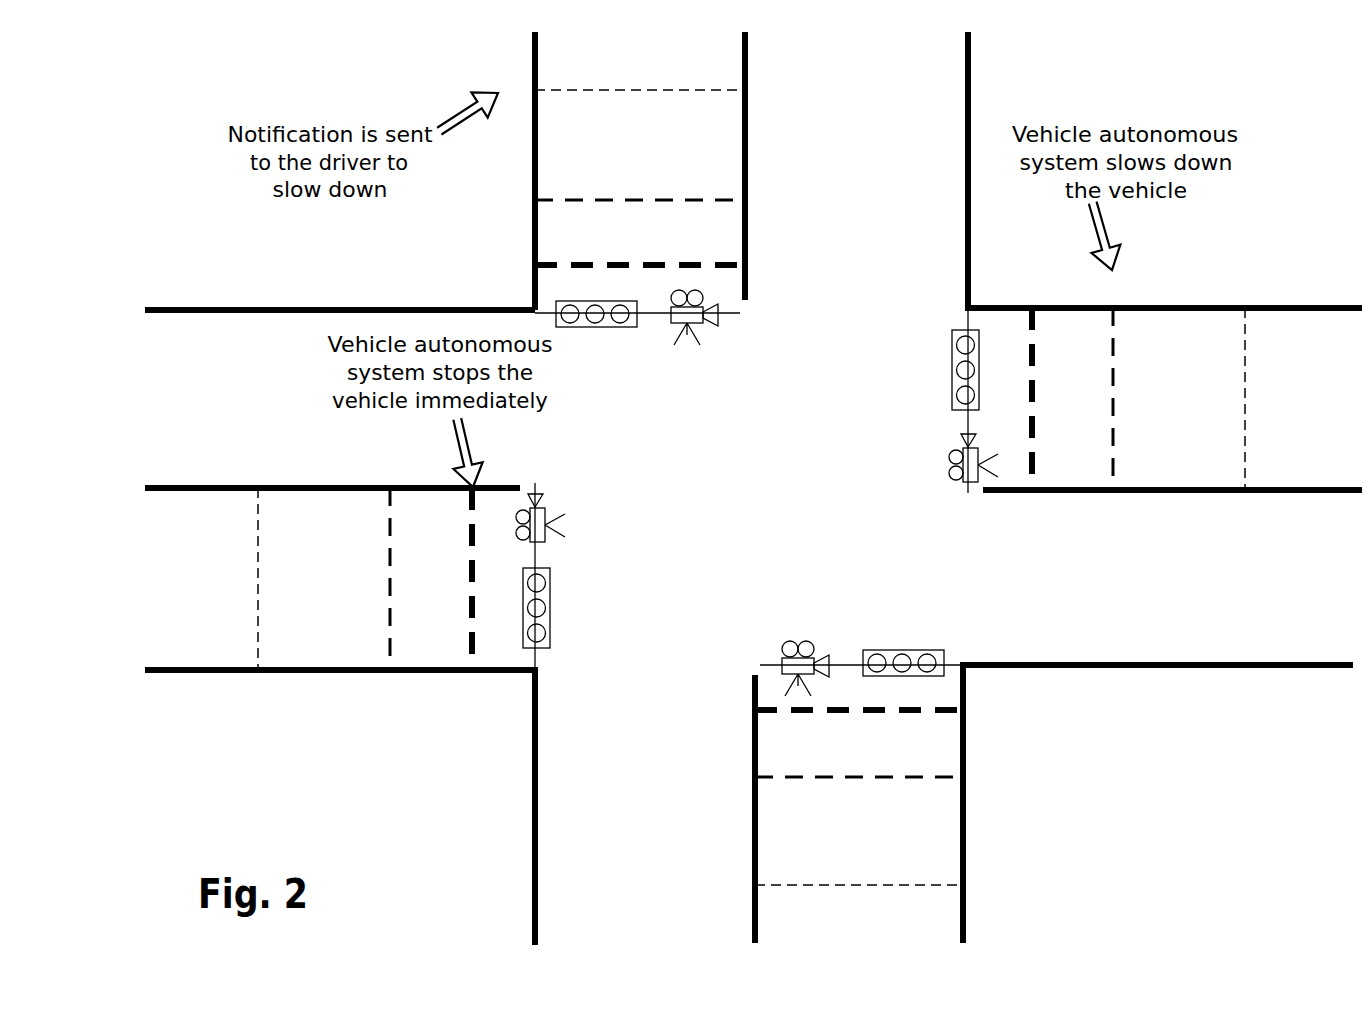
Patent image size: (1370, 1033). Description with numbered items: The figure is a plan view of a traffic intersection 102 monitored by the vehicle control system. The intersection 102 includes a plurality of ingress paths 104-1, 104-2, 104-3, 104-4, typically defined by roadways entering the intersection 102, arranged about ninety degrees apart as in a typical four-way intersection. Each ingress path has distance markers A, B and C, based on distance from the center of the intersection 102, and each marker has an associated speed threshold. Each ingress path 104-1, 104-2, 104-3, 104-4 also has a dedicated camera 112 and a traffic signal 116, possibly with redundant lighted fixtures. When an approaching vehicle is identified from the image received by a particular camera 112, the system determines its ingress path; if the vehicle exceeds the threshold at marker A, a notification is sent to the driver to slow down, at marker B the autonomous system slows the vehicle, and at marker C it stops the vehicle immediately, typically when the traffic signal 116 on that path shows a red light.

The traffic intersection 102 is at (773, 492).
The ingress path 104-1 is at (888, 159).
The ingress path 104-2 is at (1283, 606).
The ingress path 104-3 is at (651, 907).
The ingress path 104-4 is at (268, 422).
The camera 112 is at (712, 323).
The traffic signal 116 is at (612, 327).